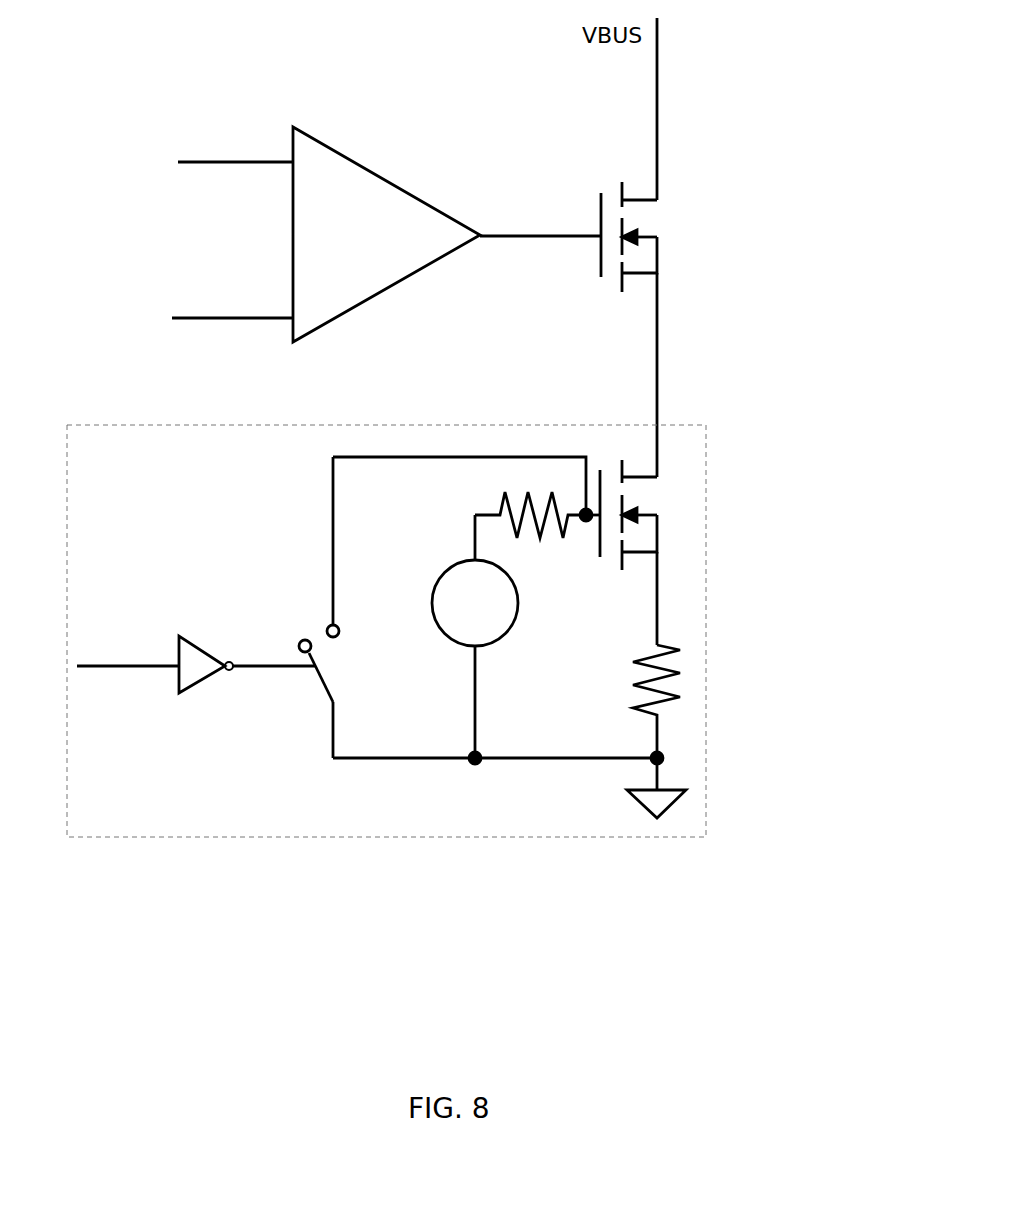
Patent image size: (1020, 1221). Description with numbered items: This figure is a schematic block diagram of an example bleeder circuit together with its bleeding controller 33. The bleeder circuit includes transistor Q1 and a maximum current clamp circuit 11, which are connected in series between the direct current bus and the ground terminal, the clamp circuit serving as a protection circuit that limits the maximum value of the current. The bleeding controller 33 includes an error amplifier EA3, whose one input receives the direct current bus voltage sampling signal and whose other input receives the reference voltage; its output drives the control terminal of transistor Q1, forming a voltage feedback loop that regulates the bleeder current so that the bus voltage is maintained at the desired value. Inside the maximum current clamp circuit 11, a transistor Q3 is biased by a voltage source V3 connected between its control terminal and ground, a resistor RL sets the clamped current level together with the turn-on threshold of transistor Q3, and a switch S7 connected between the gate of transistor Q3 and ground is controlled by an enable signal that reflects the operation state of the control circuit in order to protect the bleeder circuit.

The bleeding controller 33 is at (326, 212).
The maximum current clamp circuit 11 is at (438, 631).
The transistor Q1 is at (657, 237).
The transistor Q3 is at (621, 552).
The error amplifier EA3 is at (326, 234).
The voltage source V3 is at (454, 580).
The switch S7 is at (342, 663).
The resistor RL is at (628, 701).